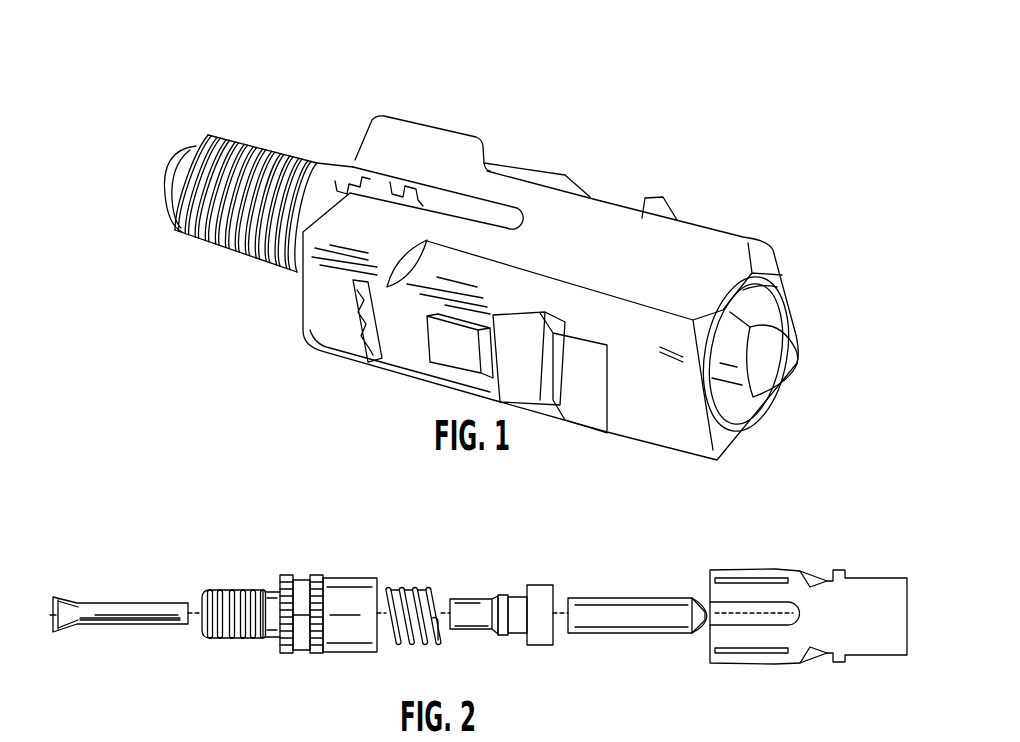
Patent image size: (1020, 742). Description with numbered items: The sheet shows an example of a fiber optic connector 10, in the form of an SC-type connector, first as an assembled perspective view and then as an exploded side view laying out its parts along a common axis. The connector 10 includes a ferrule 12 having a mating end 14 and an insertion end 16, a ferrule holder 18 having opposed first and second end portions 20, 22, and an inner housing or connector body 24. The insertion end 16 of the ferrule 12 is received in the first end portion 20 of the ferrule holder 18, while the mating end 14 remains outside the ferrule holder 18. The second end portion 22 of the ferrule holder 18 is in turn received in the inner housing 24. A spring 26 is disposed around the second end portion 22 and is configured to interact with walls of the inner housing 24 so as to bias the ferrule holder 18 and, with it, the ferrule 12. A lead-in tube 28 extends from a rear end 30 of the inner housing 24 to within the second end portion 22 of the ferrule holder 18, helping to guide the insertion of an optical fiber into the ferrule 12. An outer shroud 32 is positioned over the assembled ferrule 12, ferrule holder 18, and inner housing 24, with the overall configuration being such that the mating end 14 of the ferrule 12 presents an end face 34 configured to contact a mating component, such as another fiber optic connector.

In FIG. 1, the fiber optic connector 10 is at (552, 129).
In FIG. 2, the fiber optic connector 10 is at (97, 532).
In FIG. 1, the ferrule 12 is at (802, 338).
In FIG. 2, the ferrule 12 is at (616, 594).
In FIG. 1, the mating end 14 is at (778, 305).
In FIG. 2, the mating end 14 is at (702, 626).
In FIG. 2, the insertion end 16 is at (560, 622).
In FIG. 2, the ferrule holder 18 is at (504, 593).
In FIG. 2, the first end portion 20 is at (542, 582).
In FIG. 2, the second end portion 22 is at (470, 597).
In FIG. 1, the inner housing 24 is at (268, 144).
In FIG. 2, the inner housing 24 is at (325, 581).
In FIG. 2, the spring 26 is at (412, 586).
In FIG. 1, the lead-in tube 28 is at (175, 176).
In FIG. 2, the lead-in tube 28 is at (120, 603).
In FIG. 1, the rear end 30 is at (208, 134).
In FIG. 2, the rear end 30 is at (206, 588).
In FIG. 1, the outer shroud 32 is at (410, 118).
In FIG. 2, the outer shroud 32 is at (786, 567).
In FIG. 1, the end face 34 is at (804, 362).
In FIG. 2, the end face 34 is at (713, 602).